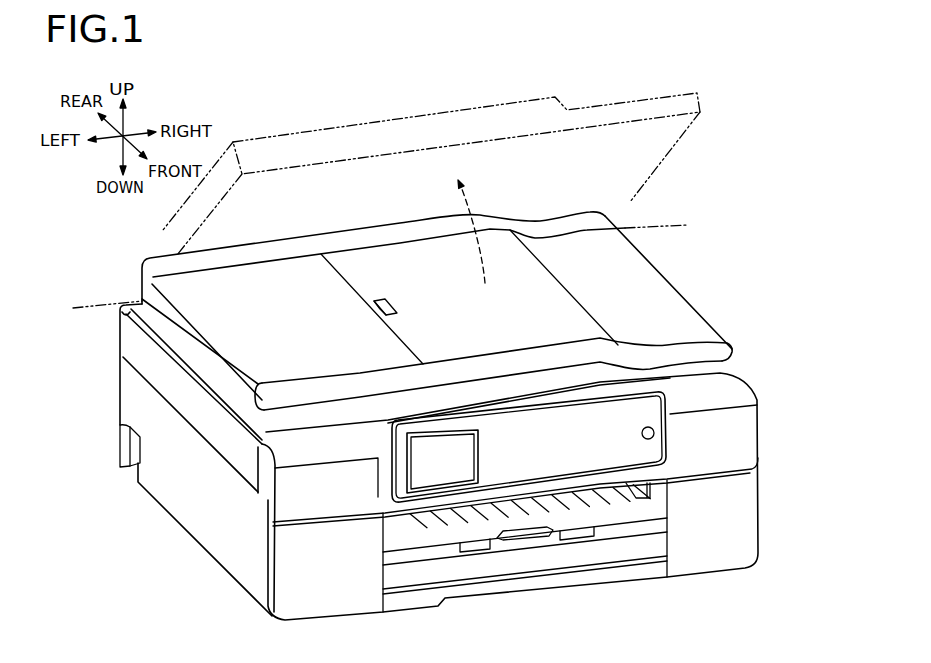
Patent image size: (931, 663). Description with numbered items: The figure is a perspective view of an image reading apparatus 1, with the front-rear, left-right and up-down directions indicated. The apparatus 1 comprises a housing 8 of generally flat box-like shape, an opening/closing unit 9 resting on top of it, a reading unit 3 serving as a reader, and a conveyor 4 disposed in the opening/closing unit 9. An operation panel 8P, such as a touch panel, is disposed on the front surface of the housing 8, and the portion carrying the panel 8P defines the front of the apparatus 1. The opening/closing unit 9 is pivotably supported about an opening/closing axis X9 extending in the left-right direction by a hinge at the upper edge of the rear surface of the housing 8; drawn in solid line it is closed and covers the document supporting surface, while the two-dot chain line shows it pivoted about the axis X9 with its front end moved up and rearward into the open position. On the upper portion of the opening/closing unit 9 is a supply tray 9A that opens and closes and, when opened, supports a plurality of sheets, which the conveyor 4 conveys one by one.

The image reading apparatus 1 is at (740, 132).
The reading unit 3 is at (232, 449).
The conveyor 4 is at (283, 303).
The housing 8 is at (223, 571).
The operation panel 8P is at (457, 445).
The opening/closing unit 9 is at (703, 93).
The supply tray 9A is at (433, 282).
The opening/closing axis X9 is at (669, 226).